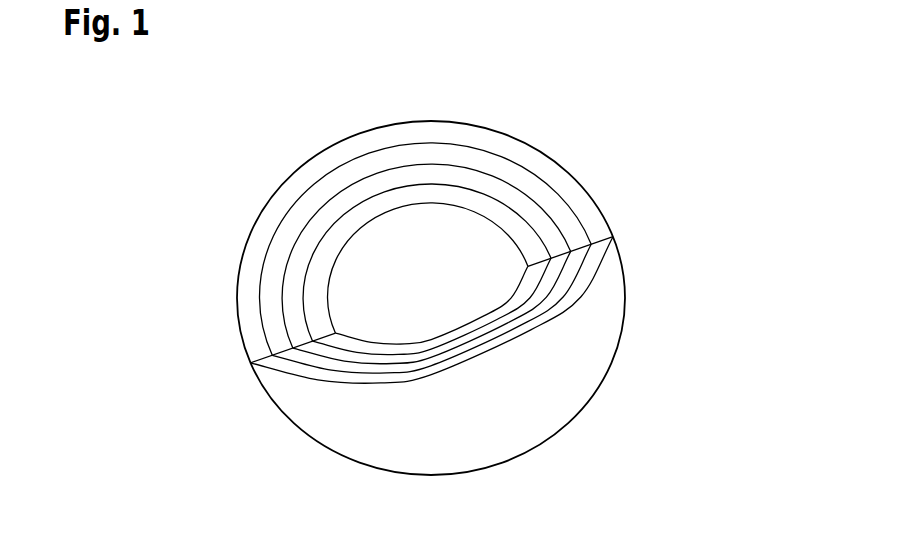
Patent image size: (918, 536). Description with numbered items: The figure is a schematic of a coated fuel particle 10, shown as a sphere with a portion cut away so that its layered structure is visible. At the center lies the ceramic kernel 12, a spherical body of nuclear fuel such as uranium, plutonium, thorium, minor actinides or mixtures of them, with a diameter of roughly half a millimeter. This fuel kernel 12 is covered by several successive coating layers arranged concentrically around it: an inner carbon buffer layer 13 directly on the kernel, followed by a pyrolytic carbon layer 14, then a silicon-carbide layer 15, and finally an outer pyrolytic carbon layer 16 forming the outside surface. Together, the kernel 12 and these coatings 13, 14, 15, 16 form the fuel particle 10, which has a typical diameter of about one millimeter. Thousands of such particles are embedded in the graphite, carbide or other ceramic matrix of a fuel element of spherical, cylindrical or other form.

The fuel particle 10 is at (602, 165).
The ceramic kernel 12 is at (350, 292).
The inner carbon buffer layer 13 is at (267, 221).
The pyrolytic carbon layer 14 is at (318, 195).
The silicon-carbide layer 15 is at (392, 182).
The outer pyrolytic carbon layer 16 is at (458, 197).